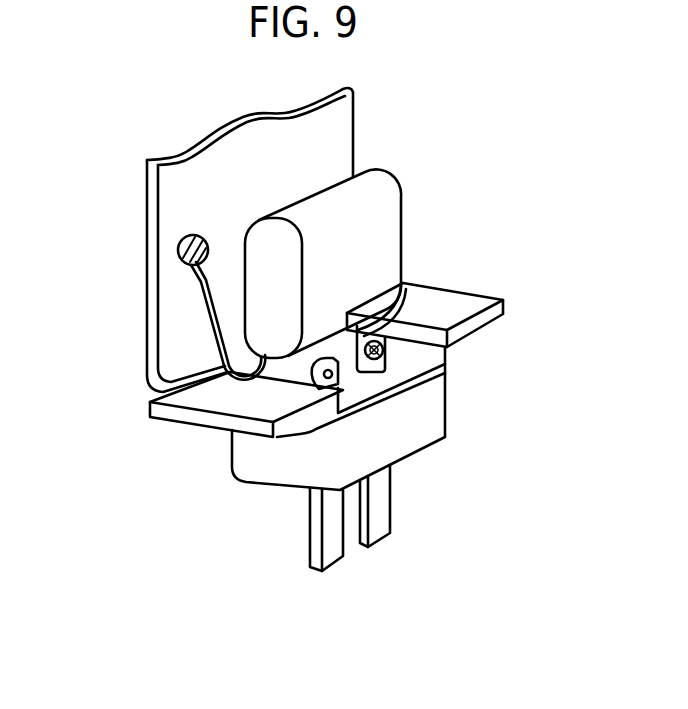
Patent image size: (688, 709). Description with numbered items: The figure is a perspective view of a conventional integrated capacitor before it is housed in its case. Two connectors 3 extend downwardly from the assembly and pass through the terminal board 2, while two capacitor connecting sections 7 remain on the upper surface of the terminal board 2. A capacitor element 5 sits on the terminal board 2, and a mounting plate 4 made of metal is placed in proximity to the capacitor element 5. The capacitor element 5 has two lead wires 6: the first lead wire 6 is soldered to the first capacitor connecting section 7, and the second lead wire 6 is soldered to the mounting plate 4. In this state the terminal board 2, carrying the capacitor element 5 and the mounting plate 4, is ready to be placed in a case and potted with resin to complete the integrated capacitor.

The terminal board 2 is at (250, 445).
The connectors 3 is at (377, 490).
The mounting plate 4 is at (190, 190).
The capacitor element 5 is at (385, 207).
The lead wire 6 is at (220, 310).
The capacitor connecting section 7 is at (178, 248).